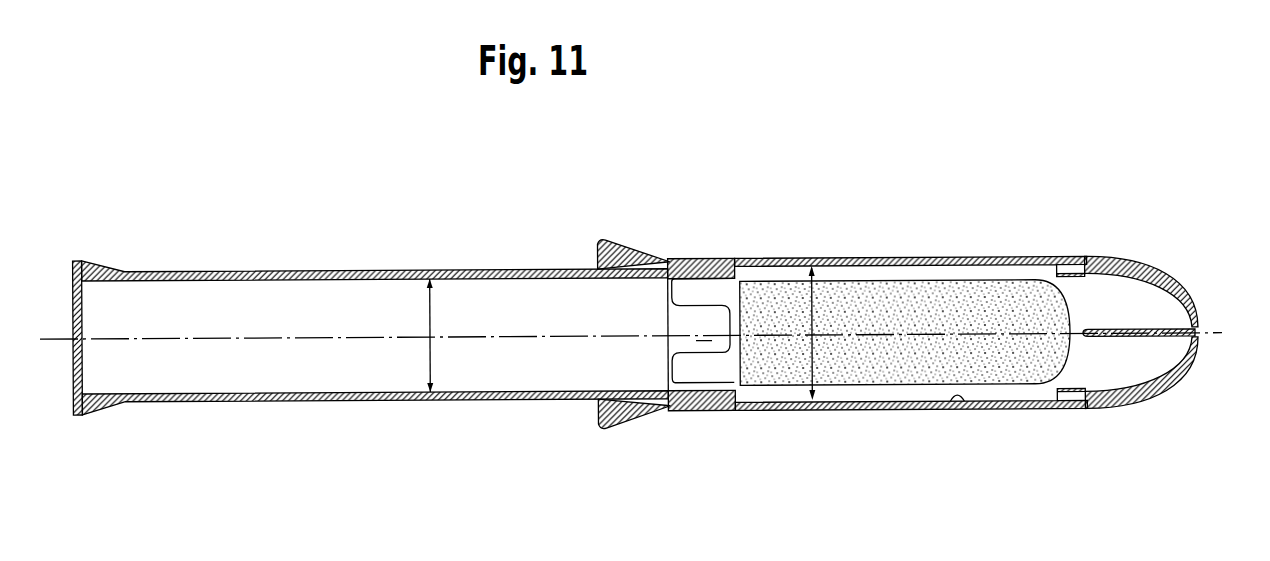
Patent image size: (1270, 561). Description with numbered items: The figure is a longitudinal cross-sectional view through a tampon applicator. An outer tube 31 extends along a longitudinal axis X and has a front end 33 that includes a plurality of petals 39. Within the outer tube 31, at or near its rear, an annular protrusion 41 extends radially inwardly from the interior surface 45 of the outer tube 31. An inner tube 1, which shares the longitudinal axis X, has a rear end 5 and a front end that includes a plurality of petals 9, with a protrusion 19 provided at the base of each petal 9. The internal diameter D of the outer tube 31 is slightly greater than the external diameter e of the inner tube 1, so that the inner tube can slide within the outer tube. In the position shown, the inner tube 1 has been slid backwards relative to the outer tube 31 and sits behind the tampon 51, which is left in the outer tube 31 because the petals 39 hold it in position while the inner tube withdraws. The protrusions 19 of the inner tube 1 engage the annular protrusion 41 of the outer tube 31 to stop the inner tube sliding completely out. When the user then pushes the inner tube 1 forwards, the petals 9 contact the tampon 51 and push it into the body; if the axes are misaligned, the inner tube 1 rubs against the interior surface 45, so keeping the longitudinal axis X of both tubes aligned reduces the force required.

The inner tube 1 is at (259, 265).
The rear end 5 is at (76, 382).
The petals 9 is at (706, 262).
The protrusion 19 is at (690, 400).
The outer tube 31 is at (998, 252).
The front end 33 is at (1195, 300).
The petals 39 is at (1158, 370).
The annular protrusion 41 is at (663, 406).
The interior surface 45 is at (961, 402).
The tampon 51 is at (888, 308).
The longitudinal axis X is at (328, 337).
The external diameter of the inner tube e is at (430, 335).
The internal diameter of the outer tube D is at (807, 333).